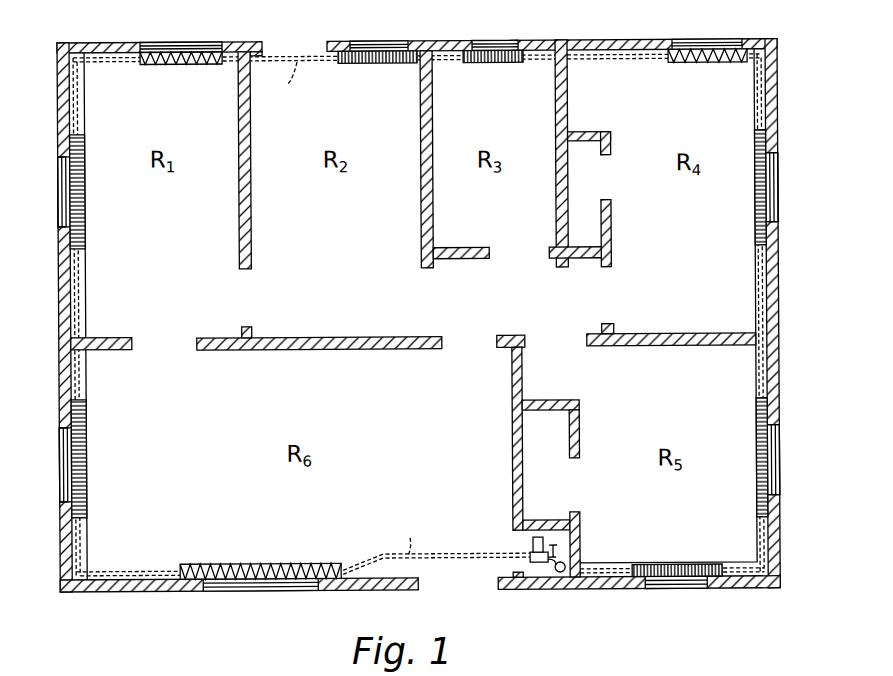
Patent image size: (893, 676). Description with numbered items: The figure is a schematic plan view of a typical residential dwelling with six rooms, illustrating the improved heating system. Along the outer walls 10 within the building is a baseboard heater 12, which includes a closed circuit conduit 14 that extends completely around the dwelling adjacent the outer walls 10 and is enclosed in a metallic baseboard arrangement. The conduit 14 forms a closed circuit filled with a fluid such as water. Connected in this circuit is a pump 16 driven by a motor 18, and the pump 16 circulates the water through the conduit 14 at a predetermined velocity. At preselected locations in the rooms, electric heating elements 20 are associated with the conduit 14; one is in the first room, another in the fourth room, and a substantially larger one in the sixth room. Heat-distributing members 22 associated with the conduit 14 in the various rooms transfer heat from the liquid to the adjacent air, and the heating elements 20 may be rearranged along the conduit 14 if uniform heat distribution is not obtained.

The outer walls 10 is at (623, 42).
The baseboard heater 12 is at (638, 66).
The closed circuit conduit 14 is at (400, 317).
The pump 16 is at (527, 566).
The motor 18 is at (529, 544).
The electric heating element 20 is at (163, 68).
The heat-distributing member 22 is at (357, 67).